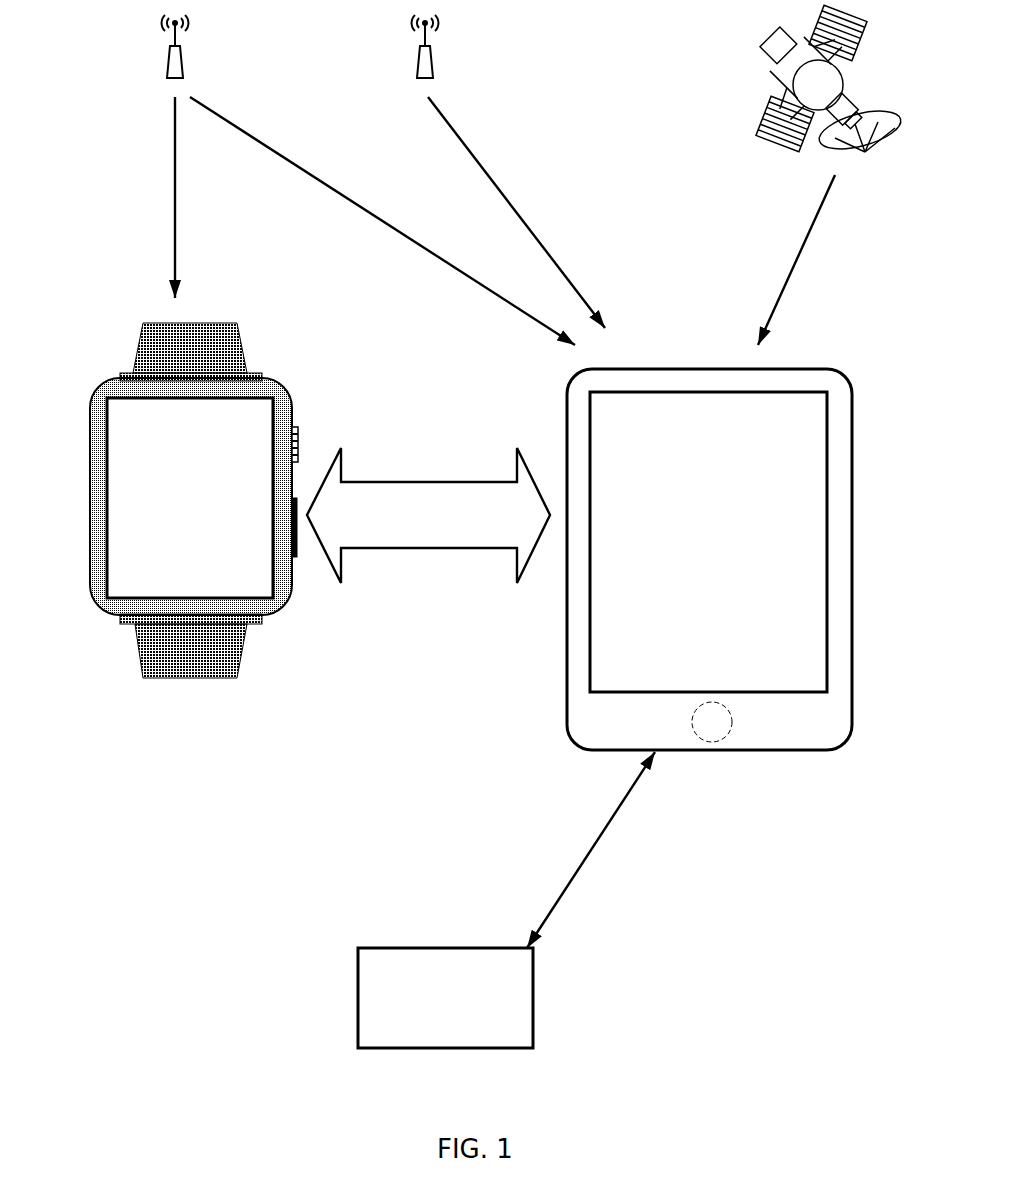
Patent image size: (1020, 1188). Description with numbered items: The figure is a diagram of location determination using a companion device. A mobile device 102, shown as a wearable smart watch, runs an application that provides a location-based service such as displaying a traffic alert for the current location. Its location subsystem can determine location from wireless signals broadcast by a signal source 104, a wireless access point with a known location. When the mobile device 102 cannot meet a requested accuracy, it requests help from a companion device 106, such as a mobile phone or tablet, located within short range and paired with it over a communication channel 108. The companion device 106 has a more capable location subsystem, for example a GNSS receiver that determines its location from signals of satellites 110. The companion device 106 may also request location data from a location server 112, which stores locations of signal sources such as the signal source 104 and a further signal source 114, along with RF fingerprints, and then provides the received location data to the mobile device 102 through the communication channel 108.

The mobile device 102 is at (97, 388).
The signal source 104 is at (165, 65).
The companion device 106 is at (567, 396).
The communication channel 108 is at (478, 482).
The satellites 110 is at (777, 50).
The location server 112 is at (358, 1000).
The signal source 114 is at (415, 65).